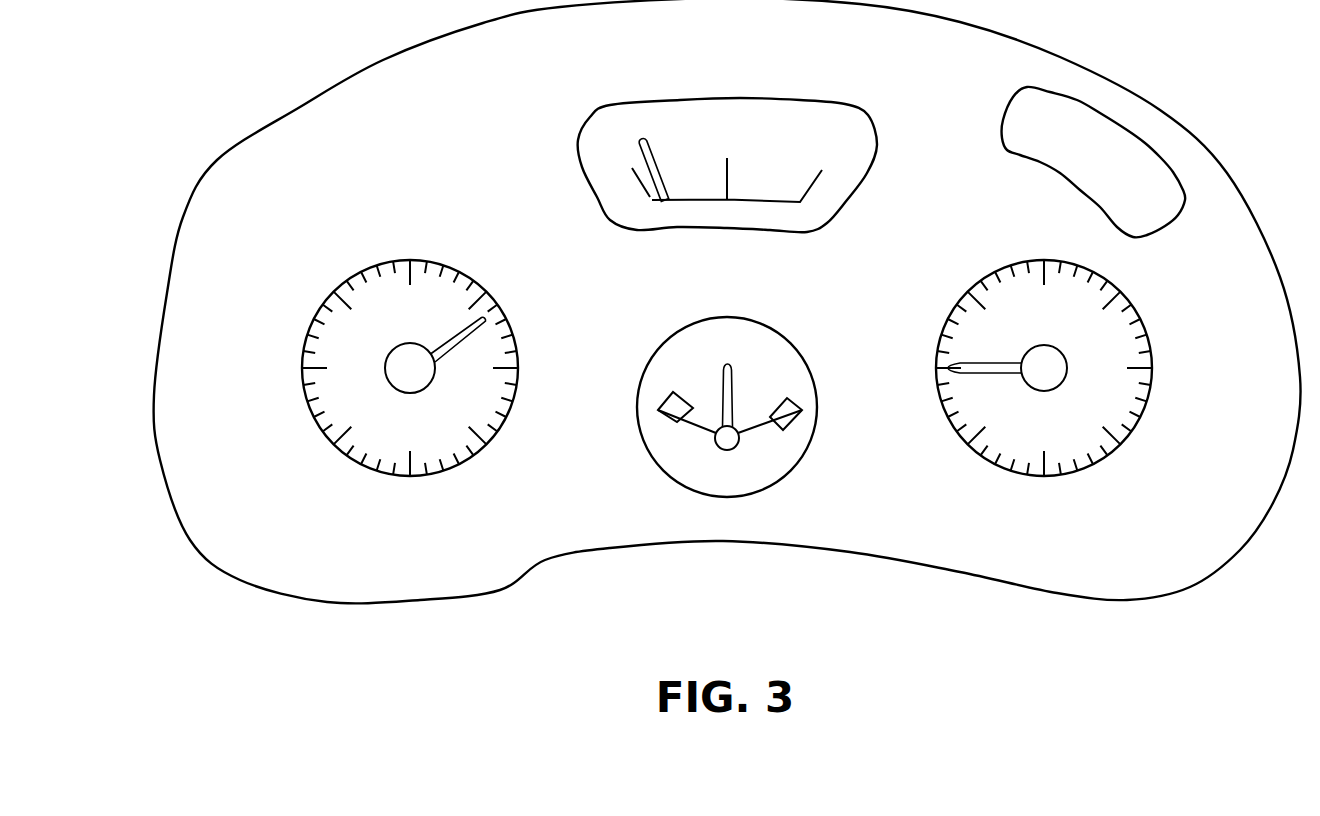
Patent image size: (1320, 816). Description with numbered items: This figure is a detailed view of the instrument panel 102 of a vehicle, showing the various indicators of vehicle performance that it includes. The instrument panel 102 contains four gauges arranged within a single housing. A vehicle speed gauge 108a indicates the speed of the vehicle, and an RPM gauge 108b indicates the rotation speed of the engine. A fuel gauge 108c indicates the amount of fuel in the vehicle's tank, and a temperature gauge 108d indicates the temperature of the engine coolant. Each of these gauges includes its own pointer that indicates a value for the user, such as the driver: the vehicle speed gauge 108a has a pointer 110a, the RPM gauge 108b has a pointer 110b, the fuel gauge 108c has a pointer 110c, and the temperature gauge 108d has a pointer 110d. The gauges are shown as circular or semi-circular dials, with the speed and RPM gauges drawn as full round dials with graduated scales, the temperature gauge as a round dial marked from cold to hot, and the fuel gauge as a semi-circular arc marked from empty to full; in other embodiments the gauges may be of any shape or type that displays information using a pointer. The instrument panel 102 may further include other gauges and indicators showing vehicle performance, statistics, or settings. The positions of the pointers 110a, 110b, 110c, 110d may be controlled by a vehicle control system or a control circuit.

The instrument panel 102 is at (320, 140).
The vehicle speed gauge 108a is at (445, 265).
The pointer 110a is at (487, 320).
The RPM gauge 108b is at (1000, 272).
The pointer 110b is at (975, 367).
The fuel gauge 108c is at (670, 112).
The pointer 110c is at (672, 199).
The temperature gauge 108d is at (752, 338).
The pointer 110d is at (728, 375).